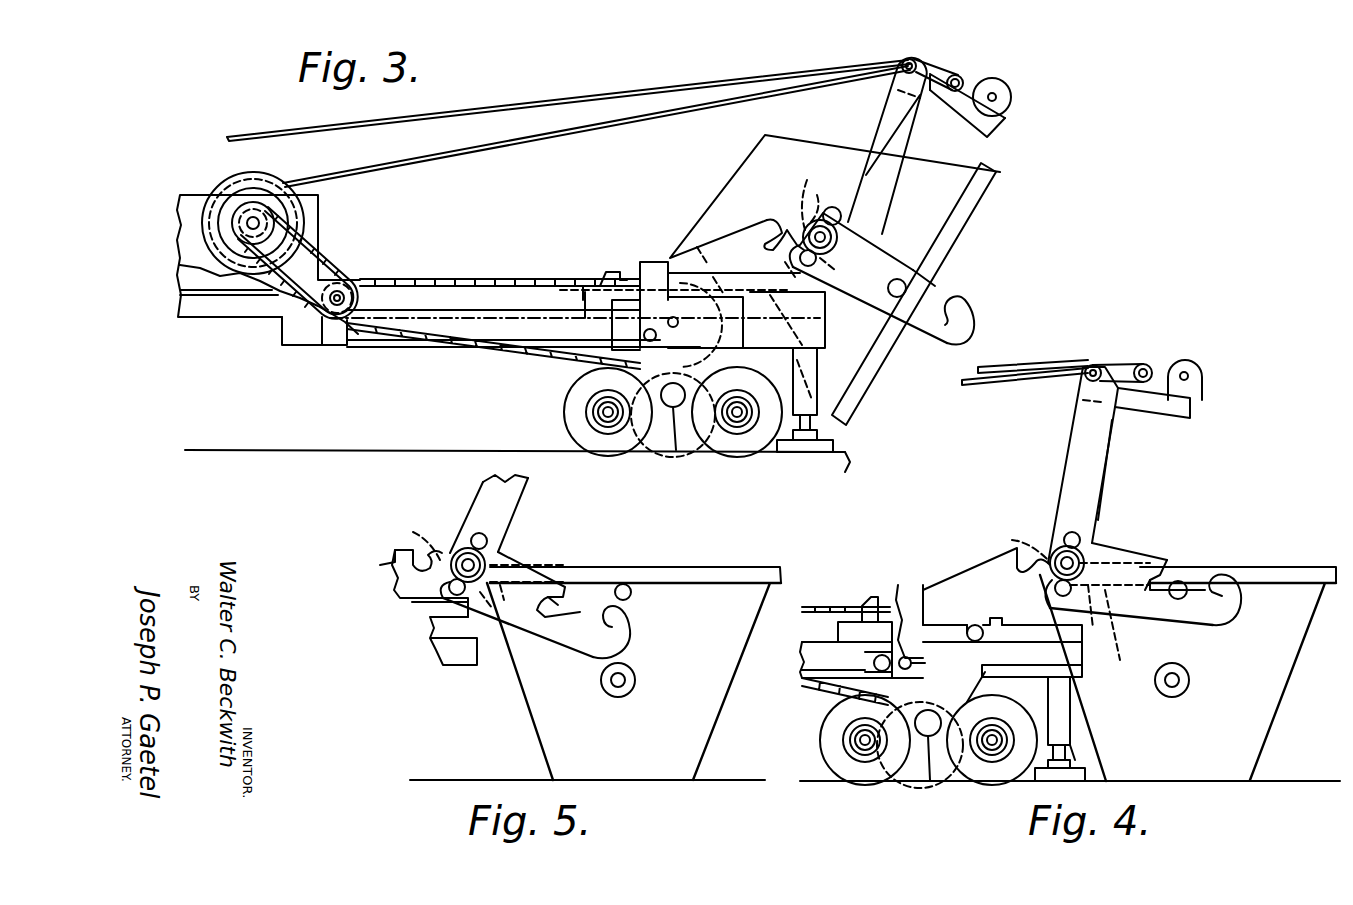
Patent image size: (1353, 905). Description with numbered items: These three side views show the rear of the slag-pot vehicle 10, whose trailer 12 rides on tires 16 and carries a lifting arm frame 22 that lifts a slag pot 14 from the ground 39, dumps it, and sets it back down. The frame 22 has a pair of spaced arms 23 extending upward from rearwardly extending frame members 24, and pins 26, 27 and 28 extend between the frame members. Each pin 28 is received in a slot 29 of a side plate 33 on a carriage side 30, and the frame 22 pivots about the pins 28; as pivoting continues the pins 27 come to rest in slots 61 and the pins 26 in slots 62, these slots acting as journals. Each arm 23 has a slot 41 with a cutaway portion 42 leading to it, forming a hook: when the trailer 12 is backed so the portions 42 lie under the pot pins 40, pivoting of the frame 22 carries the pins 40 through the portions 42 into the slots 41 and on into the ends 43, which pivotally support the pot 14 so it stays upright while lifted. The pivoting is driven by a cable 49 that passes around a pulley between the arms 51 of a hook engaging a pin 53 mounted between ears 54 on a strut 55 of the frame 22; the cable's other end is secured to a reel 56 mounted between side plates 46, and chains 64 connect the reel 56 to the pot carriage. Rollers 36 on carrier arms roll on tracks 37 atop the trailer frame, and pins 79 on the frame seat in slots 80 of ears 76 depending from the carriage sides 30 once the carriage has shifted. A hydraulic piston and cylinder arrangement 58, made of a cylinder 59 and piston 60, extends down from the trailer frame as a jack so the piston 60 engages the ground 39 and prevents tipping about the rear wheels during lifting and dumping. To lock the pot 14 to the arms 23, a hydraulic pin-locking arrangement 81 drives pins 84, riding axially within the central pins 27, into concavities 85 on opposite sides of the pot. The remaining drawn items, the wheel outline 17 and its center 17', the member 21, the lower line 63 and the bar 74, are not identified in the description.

In FIG. 3, the loading apparatus 10 is at (574, 78).
In FIG. 3, the trailer 12 is at (340, 349).
In FIG. 5, the trailer 12 is at (444, 658).
In FIG. 5, the slag pot 14 is at (738, 570).
In FIG. 4, the slag pot 14 is at (1304, 634).
In FIG. 3, the tires 16 is at (564, 428).
In FIG. 4, the tires 16 is at (820, 742).
In FIG. 3, the retracted wheel 17 is at (670, 431).
In FIG. 4, the retracted wheel 17 is at (920, 756).
In FIG. 3, the wheel pivot 17' is at (678, 431).
In FIG. 4, the wheel pivot 17' is at (937, 760).
In FIG. 3, the base 21 is at (293, 349).
In FIG. 3, the lifting arm frame 22 is at (880, 119).
In FIG. 5, the lifting arm frame 22 is at (530, 496).
In FIG. 4, the lifting arm frame 22 is at (1076, 446).
In FIG. 3, the arms 23 is at (864, 310).
In FIG. 5, the arms 23 is at (548, 630).
In FIG. 4, the arms 23 is at (1164, 606).
In FIG. 3, the frame members 24 is at (866, 176).
In FIG. 5, the frame members 24 is at (478, 486).
In FIG. 4, the frame members 24 is at (1108, 433).
In FIG. 3, the pins 26 is at (844, 216).
In FIG. 5, the pins 26 is at (486, 540).
In FIG. 4, the pins 26 is at (1066, 530).
In FIG. 3, the pins 27 is at (804, 186).
In FIG. 5, the pins 27 is at (414, 534).
In FIG. 4, the pins 27 is at (1016, 540).
In FIG. 3, the pins 28 is at (800, 258).
In FIG. 5, the pins 28 is at (443, 598).
In FIG. 4, the pins 28 is at (1054, 587).
In FIG. 3, the slot 29 is at (842, 262).
In FIG. 5, the slot 29 is at (502, 590).
In FIG. 4, the slot 29 is at (1106, 630).
In FIG. 5, the carriage sides 30 is at (398, 556).
In FIG. 4, the carriage sides 30 is at (965, 572).
In FIG. 5, the side plates 33 is at (396, 590).
In FIG. 3, the rollers 36 is at (573, 286).
In FIG. 3, the tracks 37 is at (460, 306).
In FIG. 5, the ground 39 is at (458, 790).
In FIG. 4, the ground 39 is at (1304, 788).
In FIG. 3, the pins 40 is at (908, 288).
In FIG. 5, the pins 40 is at (632, 594).
In FIG. 4, the pins 40 is at (1190, 584).
In FIG. 5, the slot 41 is at (585, 646).
In FIG. 4, the slot 41 is at (1214, 610).
In FIG. 5, the cutaway portion 42 is at (590, 596).
In FIG. 4, the cutaway portion 42 is at (1166, 562).
In FIG. 4, the slot ends 43 is at (1144, 558).
In FIG. 3, the side plates 46 is at (180, 207).
In FIG. 3, the cable 49 is at (348, 121).
In FIG. 4, the cable 49 is at (1025, 350).
In FIG. 3, the hook arms 51 is at (958, 80).
In FIG. 4, the hook arms 51 is at (1145, 375).
In FIG. 3, the pin 53 is at (1010, 93).
In FIG. 4, the pin 53 is at (1190, 378).
In FIG. 3, the ears 54 is at (1008, 116).
In FIG. 4, the ears 54 is at (1192, 396).
In FIG. 3, the strut 55 is at (950, 94).
In FIG. 4, the strut 55 is at (1180, 410).
In FIG. 3, the reel 56 is at (232, 186).
In FIG. 3, the hydraulic piston and cylinder arrangement 58 is at (815, 361).
In FIG. 4, the hydraulic piston and cylinder arrangement 58 is at (1072, 692).
In FIG. 4, the cylinder 59 is at (1072, 716).
In FIG. 3, the piston 60 is at (814, 452).
In FIG. 4, the piston 60 is at (1070, 748).
In FIG. 3, the slots 61 is at (784, 200).
In FIG. 3, the slots 62 is at (758, 220).
In FIG. 3, the cable 63 is at (480, 145).
In FIG. 4, the cable 63 is at (979, 388).
In FIG. 3, the chains 64 is at (333, 261).
In FIG. 3, the bar 74 is at (982, 181).
In FIG. 3, the ears 76 is at (743, 446).
In FIG. 4, the ears 76 is at (862, 630).
In FIG. 3, the pins 79 is at (656, 336).
In FIG. 4, the pins 79 is at (912, 602).
In FIG. 4, the slots 80 is at (924, 663).
In FIG. 3, the hydraulic pin-locking arrangement 81 is at (838, 238).
In FIG. 5, the hydraulic pin-locking arrangement 81 is at (463, 546).
In FIG. 4, the hydraulic pin-locking arrangement 81 is at (1055, 548).
In FIG. 3, the pin 84 is at (825, 190).
In FIG. 5, the concavities 85 is at (636, 682).
In FIG. 4, the concavities 85 is at (1190, 682).